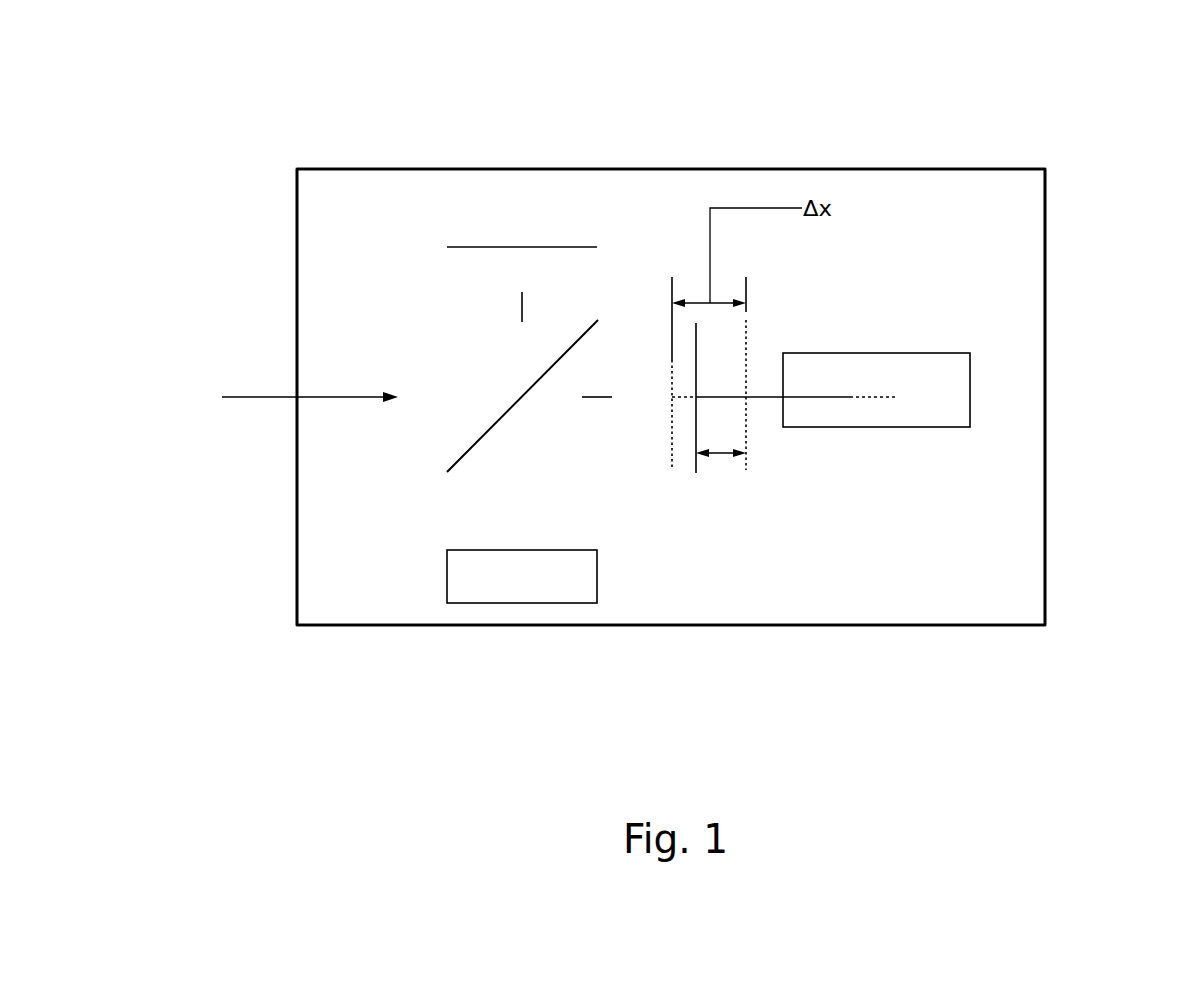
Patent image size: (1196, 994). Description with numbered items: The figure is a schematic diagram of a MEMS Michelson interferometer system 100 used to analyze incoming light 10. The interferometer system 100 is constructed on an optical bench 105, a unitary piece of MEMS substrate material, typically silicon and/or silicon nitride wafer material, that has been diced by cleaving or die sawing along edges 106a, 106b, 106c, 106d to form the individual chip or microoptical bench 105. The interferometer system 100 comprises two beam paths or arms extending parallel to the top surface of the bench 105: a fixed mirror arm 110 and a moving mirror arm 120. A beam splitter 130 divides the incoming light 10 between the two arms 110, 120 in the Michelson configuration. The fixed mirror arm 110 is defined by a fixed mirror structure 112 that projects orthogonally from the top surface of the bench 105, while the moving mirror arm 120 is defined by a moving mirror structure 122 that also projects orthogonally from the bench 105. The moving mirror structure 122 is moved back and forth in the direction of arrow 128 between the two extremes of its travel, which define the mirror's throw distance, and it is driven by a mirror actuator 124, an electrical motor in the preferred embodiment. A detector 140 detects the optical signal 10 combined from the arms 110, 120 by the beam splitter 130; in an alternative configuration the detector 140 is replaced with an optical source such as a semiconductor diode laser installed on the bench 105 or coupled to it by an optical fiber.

The interferometer system 100 is at (923, 92).
The optical bench 105 is at (762, 622).
The edge 106a is at (993, 169).
The edge 106b is at (1047, 430).
The edge 106c is at (982, 627).
The edge 106d is at (296, 585).
The incoming light 10 is at (275, 398).
The fixed mirror arm 110 is at (521, 306).
The fixed mirror structure 112 is at (490, 246).
The moving mirror arm 120 is at (600, 396).
The moving mirror structure 122 is at (696, 473).
The mirror actuator 124 is at (892, 352).
The arrow 128 is at (713, 458).
The beam splitter 130 is at (449, 470).
The detector 140 is at (500, 603).